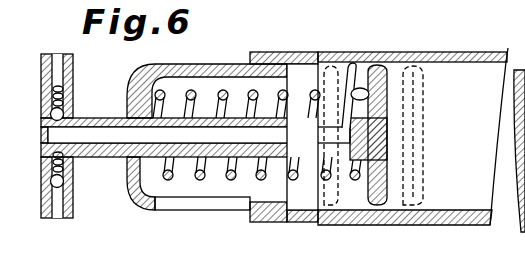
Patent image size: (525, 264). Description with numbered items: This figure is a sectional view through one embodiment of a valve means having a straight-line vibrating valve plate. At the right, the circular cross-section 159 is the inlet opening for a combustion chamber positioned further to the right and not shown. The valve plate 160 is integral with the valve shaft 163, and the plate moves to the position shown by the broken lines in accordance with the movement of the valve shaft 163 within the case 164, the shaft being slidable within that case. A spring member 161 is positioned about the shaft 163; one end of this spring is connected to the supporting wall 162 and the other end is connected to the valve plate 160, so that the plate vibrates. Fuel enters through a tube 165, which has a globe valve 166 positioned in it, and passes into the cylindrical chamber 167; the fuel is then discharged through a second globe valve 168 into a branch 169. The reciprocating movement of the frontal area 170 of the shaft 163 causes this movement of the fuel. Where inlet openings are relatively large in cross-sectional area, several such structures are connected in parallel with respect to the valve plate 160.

The circular cross-section 159 is at (428, 62).
The valve plate 160 is at (387, 137).
The spring member 161 is at (251, 102).
The supporting wall 162 is at (128, 95).
The valve shaft 163 is at (356, 83).
The case 164 is at (196, 121).
The tube 165 is at (42, 212).
The globe valve 166 is at (72, 172).
The cylindrical chamber 167 is at (74, 162).
The globe valve 168 is at (72, 97).
The branch 169 is at (41, 62).
The frontal area 170 is at (106, 140).